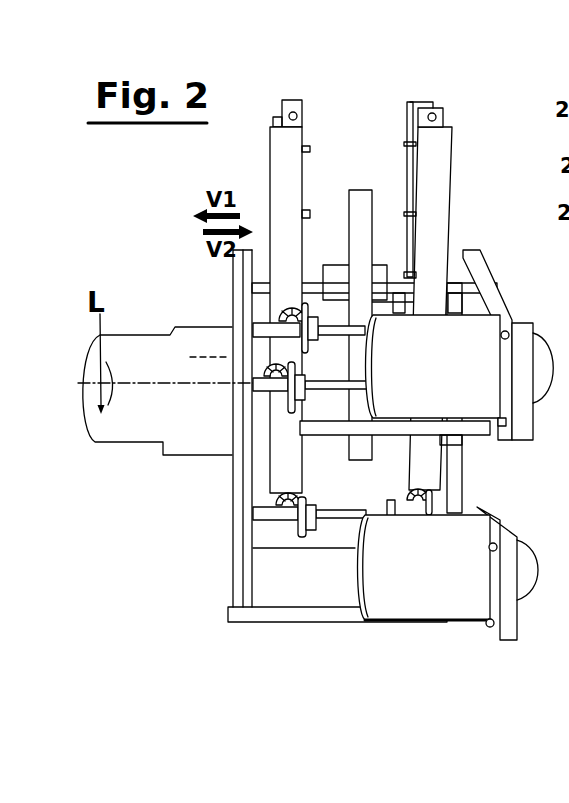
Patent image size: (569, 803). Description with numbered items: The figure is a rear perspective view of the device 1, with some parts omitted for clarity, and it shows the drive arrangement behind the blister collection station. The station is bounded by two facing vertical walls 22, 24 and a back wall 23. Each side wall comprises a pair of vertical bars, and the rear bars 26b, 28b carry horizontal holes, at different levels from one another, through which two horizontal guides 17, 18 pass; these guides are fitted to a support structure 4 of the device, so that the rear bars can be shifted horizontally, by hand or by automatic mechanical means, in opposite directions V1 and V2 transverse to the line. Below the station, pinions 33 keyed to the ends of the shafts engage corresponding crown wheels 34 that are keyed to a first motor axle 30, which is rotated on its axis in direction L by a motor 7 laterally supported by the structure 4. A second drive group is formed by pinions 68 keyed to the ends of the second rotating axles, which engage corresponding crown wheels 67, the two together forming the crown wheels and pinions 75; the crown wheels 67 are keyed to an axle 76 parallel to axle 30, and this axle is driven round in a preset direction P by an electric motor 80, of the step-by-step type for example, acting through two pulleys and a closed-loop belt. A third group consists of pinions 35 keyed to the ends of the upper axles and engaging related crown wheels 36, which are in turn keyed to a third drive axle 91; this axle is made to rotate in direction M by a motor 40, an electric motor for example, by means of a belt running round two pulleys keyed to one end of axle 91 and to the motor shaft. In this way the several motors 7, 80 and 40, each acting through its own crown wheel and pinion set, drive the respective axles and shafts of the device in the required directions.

The device 1 is at (514, 49).
The support structure 4 is at (240, 592).
The motor 7 is at (125, 432).
The horizontal guide 17 is at (452, 277).
The horizontal guide 18 is at (455, 441).
The vertical wall 22 is at (318, 160).
The back wall 23 is at (390, 267).
The vertical wall 24 is at (398, 155).
The rear bar 26b is at (287, 160).
The rear bar 28b is at (430, 173).
The first motor axle 30 is at (316, 400).
The pinion 33 is at (262, 380).
The crown wheel 34 is at (287, 413).
The pinion 35 is at (283, 312).
The crown wheel 36 is at (297, 347).
The motor 40 is at (480, 340).
The crown wheel 67 is at (305, 532).
The pinion 68 is at (283, 494).
The crown wheels and pinions 75 is at (293, 530).
The axle 76 is at (284, 535).
The electric motor 80 is at (432, 597).
The third drive axle 91 is at (342, 330).